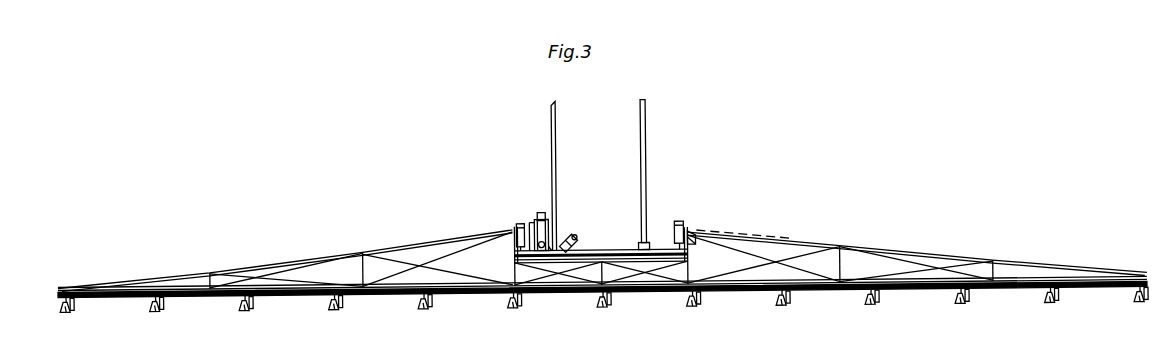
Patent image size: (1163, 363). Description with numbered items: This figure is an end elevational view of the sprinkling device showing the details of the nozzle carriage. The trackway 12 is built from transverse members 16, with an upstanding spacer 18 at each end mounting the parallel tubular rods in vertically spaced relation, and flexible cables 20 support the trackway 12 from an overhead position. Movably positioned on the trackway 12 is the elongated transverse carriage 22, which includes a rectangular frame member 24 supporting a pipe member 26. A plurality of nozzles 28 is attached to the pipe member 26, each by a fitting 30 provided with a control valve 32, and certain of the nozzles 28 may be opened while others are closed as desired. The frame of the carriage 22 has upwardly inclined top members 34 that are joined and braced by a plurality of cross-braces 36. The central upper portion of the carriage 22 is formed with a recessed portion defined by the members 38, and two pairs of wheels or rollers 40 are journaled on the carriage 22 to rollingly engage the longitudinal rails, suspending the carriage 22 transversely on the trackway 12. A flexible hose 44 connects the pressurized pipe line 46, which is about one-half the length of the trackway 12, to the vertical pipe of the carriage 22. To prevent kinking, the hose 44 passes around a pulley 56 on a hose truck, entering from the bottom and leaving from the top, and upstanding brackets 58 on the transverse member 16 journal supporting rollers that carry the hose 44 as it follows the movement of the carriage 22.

The trackway 12 is at (612, 247).
The transverse members 16 is at (592, 249).
The upstanding spacer 18 is at (285, 261).
The cables 20 is at (647, 171).
The carriage 22 is at (858, 241).
The rectangular frame member 24 is at (1103, 282).
The pipe member 26 is at (937, 293).
The nozzles 28 is at (156, 306).
The fitting 30 is at (866, 299).
The control valve 32 is at (879, 303).
The upwardly inclined top members 34 is at (950, 258).
The cross-braces 36 is at (899, 261).
The members 38 is at (694, 236).
The wheels or rollers 40 is at (519, 224).
The flexible hose 44 is at (545, 219).
The pipe line 46 is at (571, 237).
The pulley 56 is at (550, 222).
The upstanding brackets 58 is at (532, 246).